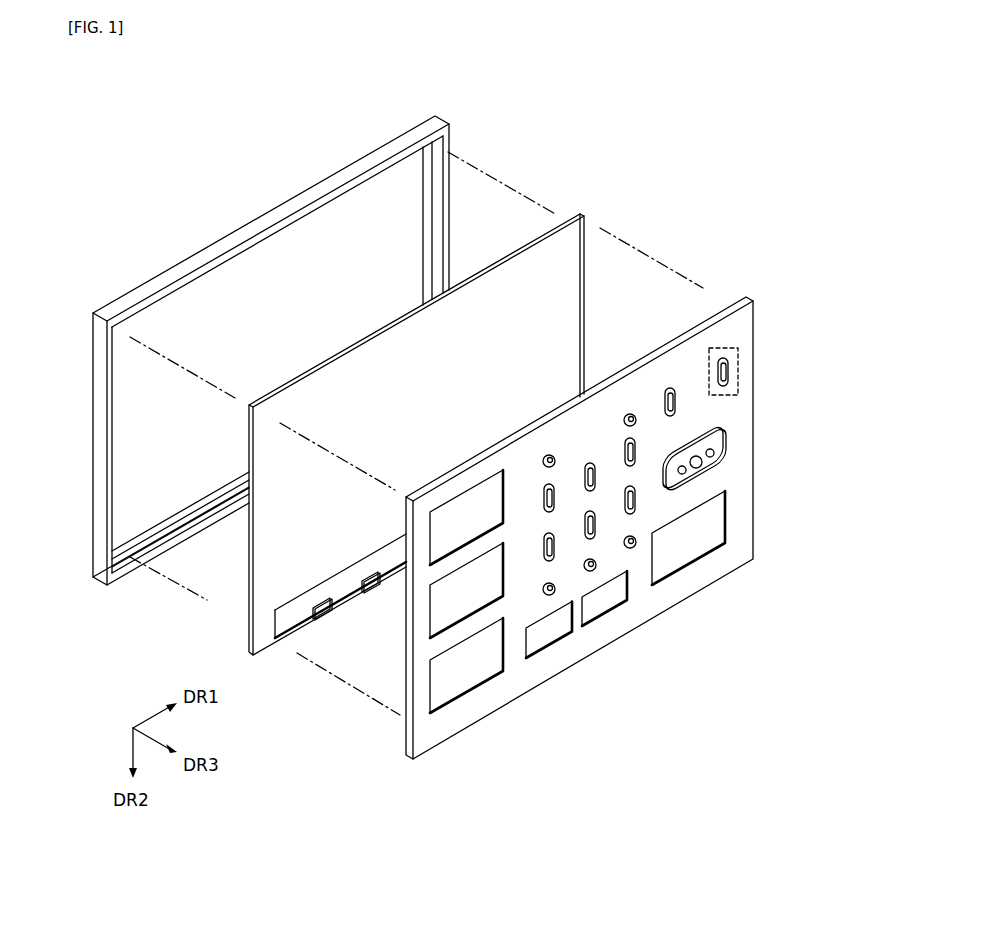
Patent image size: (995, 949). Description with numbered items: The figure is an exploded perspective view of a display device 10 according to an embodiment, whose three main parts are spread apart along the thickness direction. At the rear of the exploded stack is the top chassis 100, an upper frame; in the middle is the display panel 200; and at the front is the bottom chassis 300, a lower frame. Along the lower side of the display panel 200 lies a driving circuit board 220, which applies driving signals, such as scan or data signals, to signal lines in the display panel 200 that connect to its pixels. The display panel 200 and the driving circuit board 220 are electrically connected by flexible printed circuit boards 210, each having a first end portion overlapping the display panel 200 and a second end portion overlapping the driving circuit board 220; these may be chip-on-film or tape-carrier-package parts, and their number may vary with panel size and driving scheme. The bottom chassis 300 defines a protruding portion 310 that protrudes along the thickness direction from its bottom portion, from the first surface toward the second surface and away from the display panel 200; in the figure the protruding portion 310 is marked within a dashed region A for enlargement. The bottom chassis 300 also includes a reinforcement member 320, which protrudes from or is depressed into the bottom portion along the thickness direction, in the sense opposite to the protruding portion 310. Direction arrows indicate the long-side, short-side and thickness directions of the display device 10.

The display device 10 is at (221, 208).
The top chassis 100 is at (448, 133).
The display panel 200 is at (570, 240).
The flexible printed circuit board 210 is at (323, 618).
The driving circuit board 220 is at (289, 623).
The bottom chassis 300 is at (733, 326).
The protruding portion 310 is at (729, 372).
The reinforcement member 320 is at (726, 513).
The enlarged region A is at (738, 352).